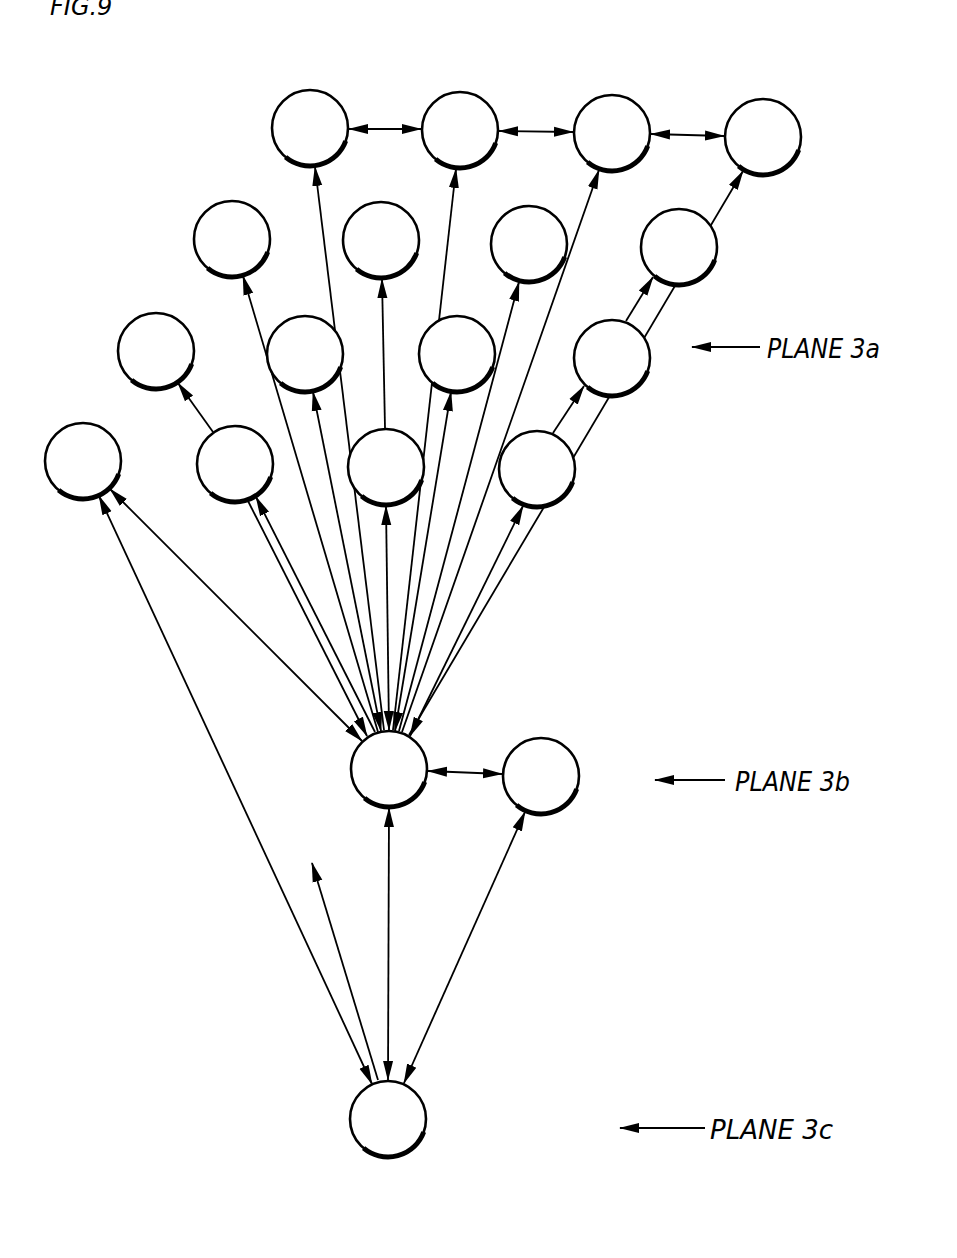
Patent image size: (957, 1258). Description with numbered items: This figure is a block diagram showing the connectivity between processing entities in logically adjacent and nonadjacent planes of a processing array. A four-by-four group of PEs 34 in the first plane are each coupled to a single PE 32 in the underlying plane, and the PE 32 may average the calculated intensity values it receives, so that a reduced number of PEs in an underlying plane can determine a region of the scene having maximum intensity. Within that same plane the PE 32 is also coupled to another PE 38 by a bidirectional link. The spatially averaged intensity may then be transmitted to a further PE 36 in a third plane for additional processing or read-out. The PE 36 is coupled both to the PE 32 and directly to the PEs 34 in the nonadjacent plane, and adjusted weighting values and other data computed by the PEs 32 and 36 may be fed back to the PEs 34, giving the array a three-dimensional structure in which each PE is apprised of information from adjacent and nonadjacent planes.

The group of PEs 34 is at (120, 333).
The PE 32 is at (421, 748).
The auxiliary node of plane 3b 38 is at (570, 752).
The PE 36 is at (421, 1100).